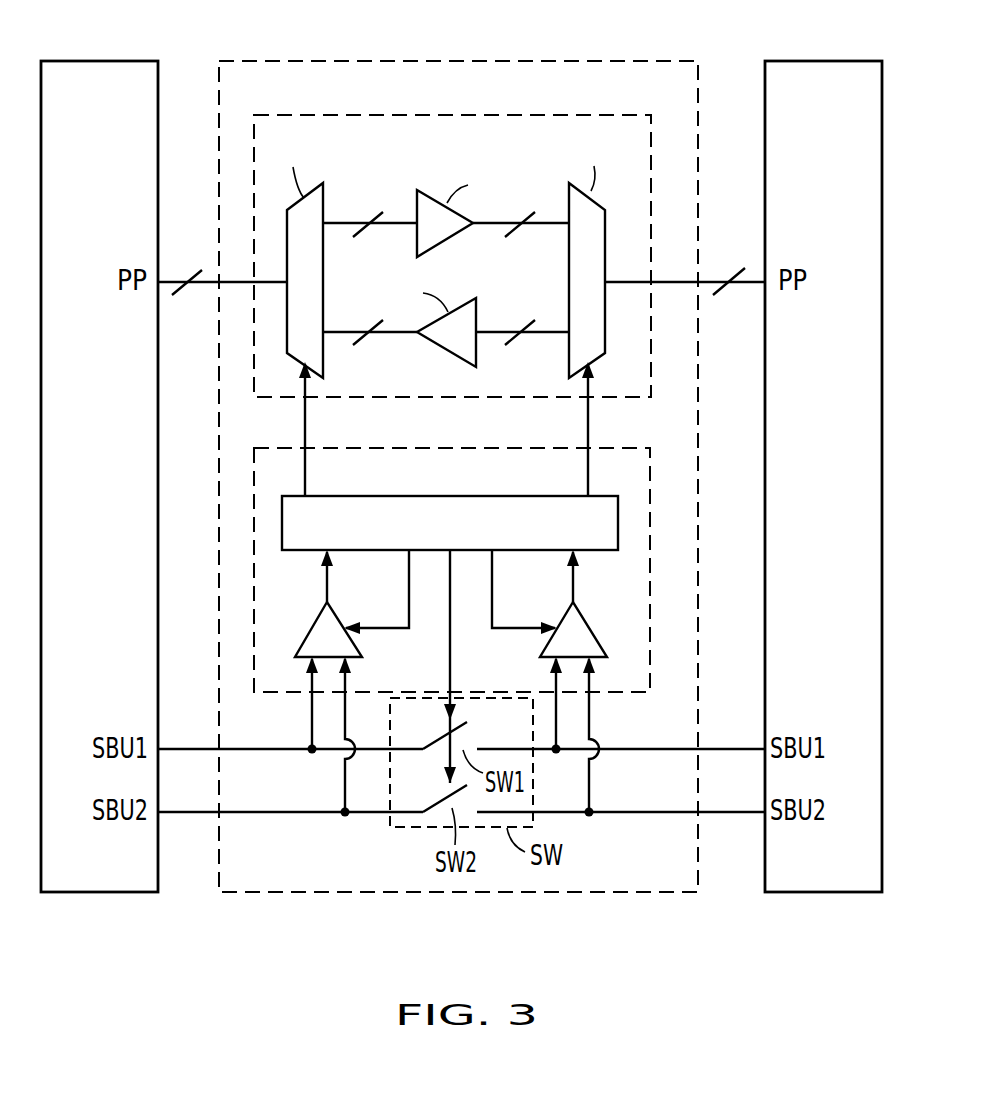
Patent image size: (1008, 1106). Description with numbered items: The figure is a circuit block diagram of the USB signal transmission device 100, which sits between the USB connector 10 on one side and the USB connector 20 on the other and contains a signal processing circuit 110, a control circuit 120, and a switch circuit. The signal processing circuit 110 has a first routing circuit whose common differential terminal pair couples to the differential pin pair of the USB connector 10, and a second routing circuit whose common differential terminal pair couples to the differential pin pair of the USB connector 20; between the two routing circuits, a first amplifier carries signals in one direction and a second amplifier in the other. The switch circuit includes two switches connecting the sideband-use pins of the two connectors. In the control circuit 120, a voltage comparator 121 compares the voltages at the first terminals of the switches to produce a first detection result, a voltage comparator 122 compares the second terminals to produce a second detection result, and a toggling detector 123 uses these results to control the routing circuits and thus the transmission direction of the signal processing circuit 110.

The USB connector 10 is at (823, 61).
The USB connector 20 is at (98, 61).
The USB signal transmission device 100 is at (522, 61).
The signal processing circuit 110 is at (570, 115).
The control circuit 120 is at (615, 692).
The voltage comparator 121 is at (541, 659).
The voltage comparator 122 is at (361, 659).
The toggling detector 123 is at (490, 496).